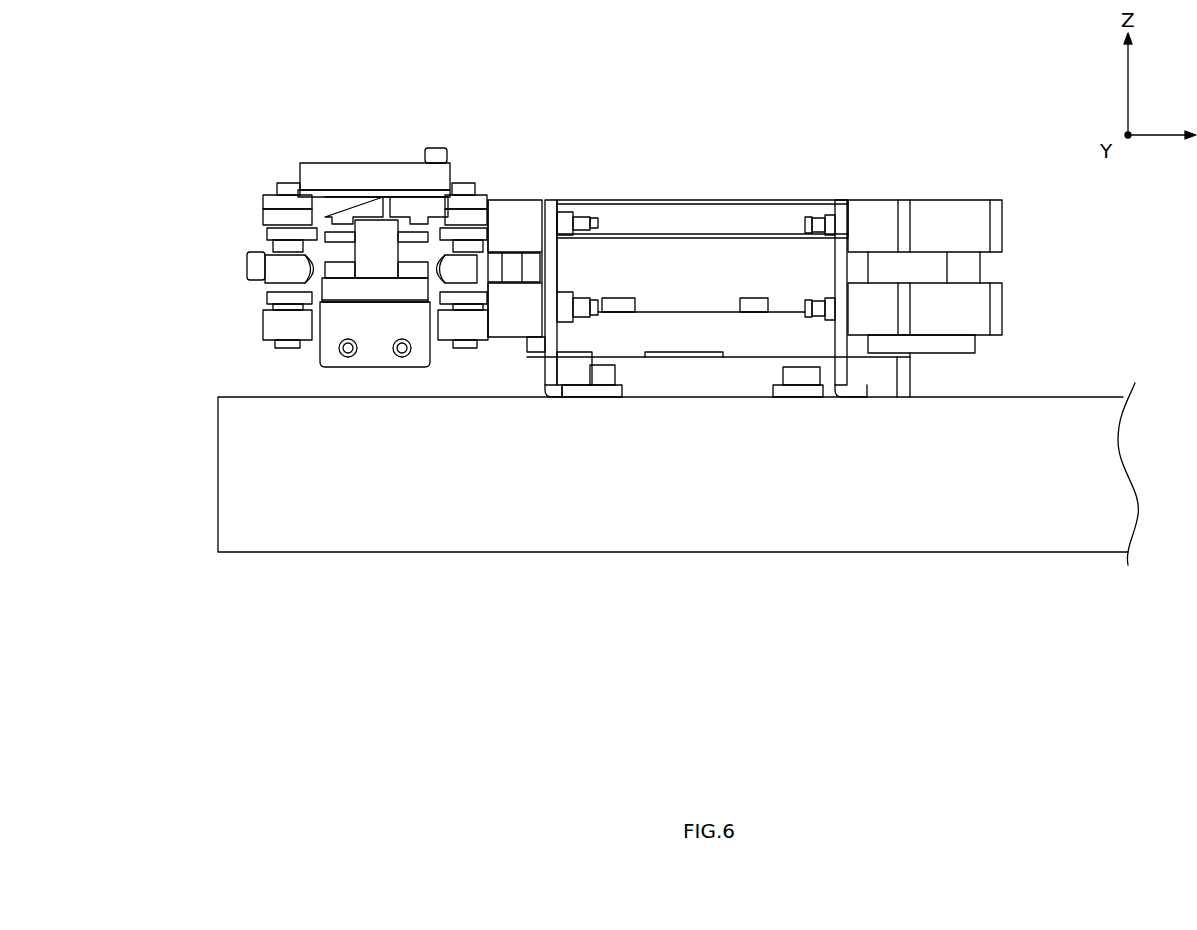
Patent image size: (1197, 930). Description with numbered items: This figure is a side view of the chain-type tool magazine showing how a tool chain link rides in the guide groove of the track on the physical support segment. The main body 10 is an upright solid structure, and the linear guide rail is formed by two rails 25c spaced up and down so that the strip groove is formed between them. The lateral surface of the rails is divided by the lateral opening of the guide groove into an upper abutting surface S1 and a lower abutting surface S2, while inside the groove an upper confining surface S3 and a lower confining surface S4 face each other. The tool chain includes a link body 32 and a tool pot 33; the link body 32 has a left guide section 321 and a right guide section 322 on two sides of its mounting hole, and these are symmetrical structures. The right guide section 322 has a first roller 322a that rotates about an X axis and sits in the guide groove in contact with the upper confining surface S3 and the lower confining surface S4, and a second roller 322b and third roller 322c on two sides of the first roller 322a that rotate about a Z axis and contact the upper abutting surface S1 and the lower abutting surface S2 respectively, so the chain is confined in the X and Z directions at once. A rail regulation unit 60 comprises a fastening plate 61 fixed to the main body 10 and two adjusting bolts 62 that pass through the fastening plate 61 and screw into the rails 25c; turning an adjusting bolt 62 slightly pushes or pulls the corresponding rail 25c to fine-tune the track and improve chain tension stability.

The main body 10 is at (1104, 388).
The rails 25c is at (875, 212).
The link body 32 is at (375, 250).
The tool pot 33 is at (345, 170).
The rail regulation unit 60 is at (817, 120).
The fastening plate 61 is at (833, 268).
The adjusting bolts 62 is at (817, 213).
The left guide section 321 is at (230, 286).
The right guide section 322 is at (502, 310).
The first roller 322a is at (513, 263).
The second roller 322b is at (462, 202).
The third roller 322c is at (460, 317).
The upper abutting surface S1 is at (494, 222).
The lower abutting surface S2 is at (499, 300).
The upper confining surface S3 is at (547, 263).
The lower confining surface S4 is at (530, 277).